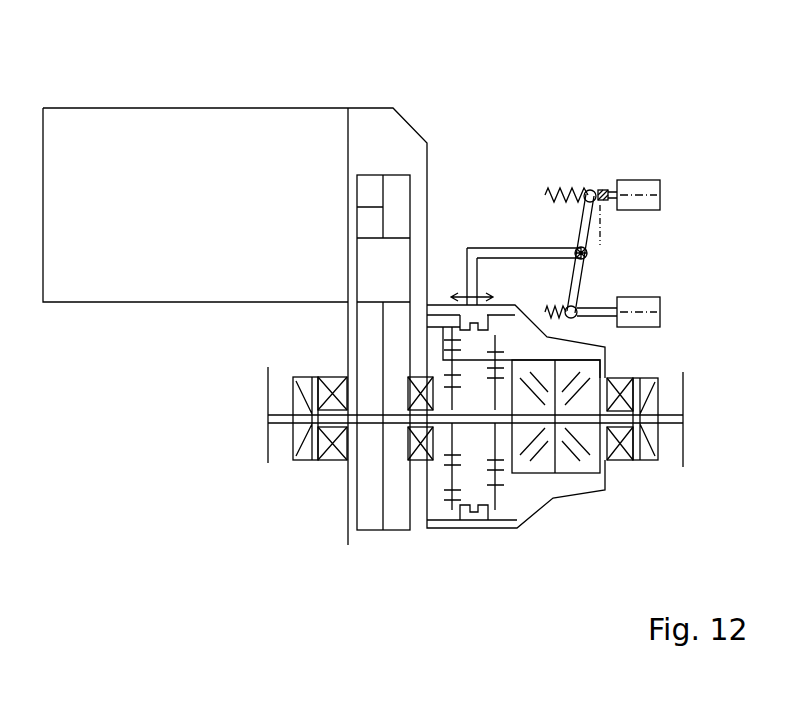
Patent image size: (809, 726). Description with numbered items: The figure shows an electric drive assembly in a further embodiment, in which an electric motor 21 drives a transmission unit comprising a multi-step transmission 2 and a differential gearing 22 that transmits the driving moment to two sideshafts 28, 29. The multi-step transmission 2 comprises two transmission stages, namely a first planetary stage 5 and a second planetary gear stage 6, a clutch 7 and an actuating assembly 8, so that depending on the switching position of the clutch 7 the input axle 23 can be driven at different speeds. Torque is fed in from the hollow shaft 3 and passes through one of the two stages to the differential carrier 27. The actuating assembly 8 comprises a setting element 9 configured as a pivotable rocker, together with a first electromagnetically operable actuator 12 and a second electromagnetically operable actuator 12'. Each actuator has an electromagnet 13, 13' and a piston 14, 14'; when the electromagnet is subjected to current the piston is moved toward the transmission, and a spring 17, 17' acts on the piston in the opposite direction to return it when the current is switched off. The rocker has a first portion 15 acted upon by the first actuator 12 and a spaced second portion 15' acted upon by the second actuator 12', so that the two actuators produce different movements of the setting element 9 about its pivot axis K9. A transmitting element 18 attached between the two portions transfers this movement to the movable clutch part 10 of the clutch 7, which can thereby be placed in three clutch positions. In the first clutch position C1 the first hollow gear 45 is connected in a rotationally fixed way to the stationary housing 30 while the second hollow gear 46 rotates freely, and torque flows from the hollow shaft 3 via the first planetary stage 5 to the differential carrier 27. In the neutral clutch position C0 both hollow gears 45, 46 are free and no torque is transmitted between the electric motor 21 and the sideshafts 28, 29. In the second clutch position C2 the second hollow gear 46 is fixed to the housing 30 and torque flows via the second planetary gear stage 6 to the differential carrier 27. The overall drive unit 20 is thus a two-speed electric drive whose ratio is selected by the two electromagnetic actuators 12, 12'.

The electric motor 21 is at (222, 128).
The differential gearing 22 is at (586, 492).
The hollow shaft 3 is at (462, 436).
The sideshaft 29 is at (267, 387).
The sideshaft 28 is at (690, 394).
The input axle 23 is at (214, 426).
The differential carrier 27 is at (540, 475).
The first clutch position C1 is at (448, 388).
The second clutch position C2 is at (497, 388).
The neutral clutch position C0 is at (472, 325).
The first hollow gear 45 is at (440, 322).
The second hollow gear 46 is at (497, 332).
The transmitting element 18 is at (500, 246).
The setting element 9 is at (574, 226).
The lever pivot K9 is at (590, 258).
The spring 17 is at (565, 167).
The first portion 15 is at (588, 178).
The piston 14 is at (601, 165).
The electromagnet 13 is at (638, 169).
The first electromagnetically operable actuator 12 is at (697, 191).
The actuating assembly 8 is at (675, 157).
The spring 17' is at (547, 292).
The second portion 15' is at (607, 286).
The piston 14' is at (625, 284).
The electromagnet 13' is at (664, 289).
The second electromagnetically operable actuator 12' is at (707, 290).
The drive unit 20 is at (573, 92).
The multi-step transmission 2 is at (500, 163).
The first planetary stage 5 is at (446, 508).
The clutch 7 is at (482, 547).
The stationary housing 30 is at (503, 533).
The movable clutch part 10 is at (464, 540).
The second planetary gear stage 6 is at (516, 502).